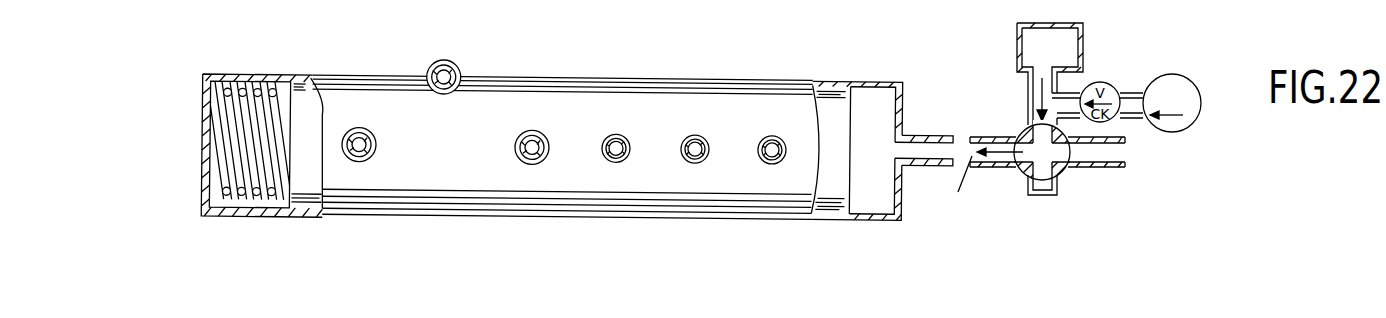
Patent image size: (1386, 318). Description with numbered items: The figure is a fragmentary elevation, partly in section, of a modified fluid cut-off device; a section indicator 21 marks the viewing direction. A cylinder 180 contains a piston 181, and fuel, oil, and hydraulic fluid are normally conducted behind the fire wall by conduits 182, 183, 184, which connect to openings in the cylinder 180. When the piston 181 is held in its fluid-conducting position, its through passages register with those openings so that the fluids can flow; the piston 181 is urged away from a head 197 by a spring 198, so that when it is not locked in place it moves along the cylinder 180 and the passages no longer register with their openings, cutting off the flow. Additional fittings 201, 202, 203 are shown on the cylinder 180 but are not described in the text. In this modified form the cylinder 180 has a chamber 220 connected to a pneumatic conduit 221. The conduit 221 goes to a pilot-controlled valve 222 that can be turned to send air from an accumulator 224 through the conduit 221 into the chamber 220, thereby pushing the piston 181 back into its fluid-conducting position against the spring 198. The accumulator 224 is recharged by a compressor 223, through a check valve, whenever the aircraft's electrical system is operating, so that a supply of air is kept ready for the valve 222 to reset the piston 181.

The section view indicator (FIG. 21) 21 is at (747, 7).
The cylinder 180 is at (472, 164).
The piston 181 is at (821, 100).
The conduit 182 is at (621, 118).
The conduit 183 is at (693, 118).
The conduit 184 is at (770, 137).
The head 197 is at (203, 99).
The spring 198 is at (228, 89).
The port fitting 201 is at (371, 136).
The top port fitting 202 is at (458, 67).
The port fitting 203 is at (538, 134).
The chamber 220 is at (882, 113).
The pneumatic conduit 221 is at (923, 166).
The pilot-controlled valve 222 is at (1060, 166).
The compressor 223 is at (1187, 80).
The accumulator 224 is at (1070, 53).